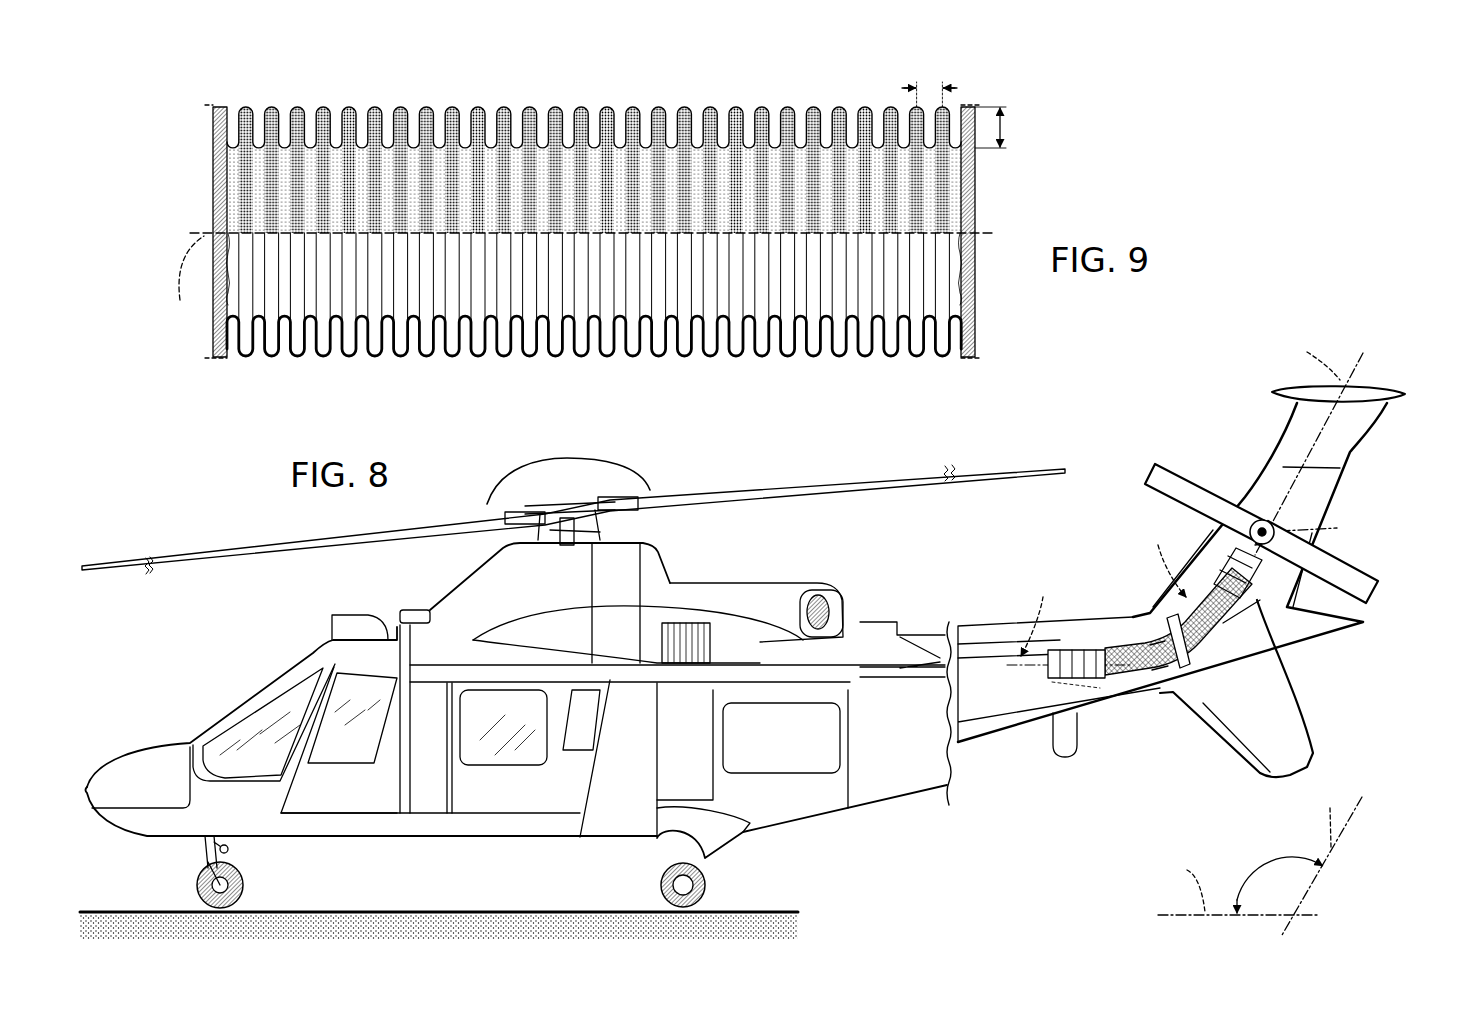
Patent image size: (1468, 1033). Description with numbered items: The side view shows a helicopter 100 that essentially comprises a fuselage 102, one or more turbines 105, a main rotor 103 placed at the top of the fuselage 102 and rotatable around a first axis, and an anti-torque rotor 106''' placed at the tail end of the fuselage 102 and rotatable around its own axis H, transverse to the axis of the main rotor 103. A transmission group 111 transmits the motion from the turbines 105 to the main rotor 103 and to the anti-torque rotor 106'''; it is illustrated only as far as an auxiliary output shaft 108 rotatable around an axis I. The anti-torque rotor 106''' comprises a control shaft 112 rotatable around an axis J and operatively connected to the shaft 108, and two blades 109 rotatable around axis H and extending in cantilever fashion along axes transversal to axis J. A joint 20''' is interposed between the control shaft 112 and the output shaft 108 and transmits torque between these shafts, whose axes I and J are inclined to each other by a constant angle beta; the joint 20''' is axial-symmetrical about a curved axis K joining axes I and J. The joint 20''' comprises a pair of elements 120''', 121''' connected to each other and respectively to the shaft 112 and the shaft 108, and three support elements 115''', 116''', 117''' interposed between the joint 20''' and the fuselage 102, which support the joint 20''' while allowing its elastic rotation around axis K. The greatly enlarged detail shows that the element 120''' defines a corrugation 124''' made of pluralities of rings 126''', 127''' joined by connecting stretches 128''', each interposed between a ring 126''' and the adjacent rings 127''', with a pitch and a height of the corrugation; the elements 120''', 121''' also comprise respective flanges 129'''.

In FIG. 8, the helicopter 100 is at (765, 640).
In FIG. 8, the fuselage 102 is at (880, 760).
In FIG. 8, the main rotor 103 is at (703, 481).
In FIG. 8, the turbines 105 is at (856, 597).
In FIG. 8, the anti-torque rotor 106''' is at (1181, 571).
In FIG. 8, the auxiliary output shaft 108 is at (1000, 650).
In FIG. 8, the blades 109 is at (1178, 488).
In FIG. 8, the transmission group 111 is at (1042, 678).
In FIG. 8, the control shaft 112 is at (1245, 547).
In FIG. 8, the support element 115''' is at (1094, 704).
In FIG. 8, the support element 116''' is at (1188, 701).
In FIG. 8, the support element 117''' is at (1308, 648).
In FIG. 9, the element 120''' is at (629, 212).
In FIG. 8, the element 120''' is at (1129, 608).
In FIG. 8, the element 121''' is at (1270, 688).
In FIG. 8, the joint 20''' is at (1145, 721).
In FIG. 9, the corrugation 124''' is at (594, 199).
In FIG. 9, the rings 126''' is at (594, 143).
In FIG. 9, the rings 127''' is at (594, 155).
In FIG. 9, the connecting stretches 128''' is at (594, 205).
In FIG. 9, the flanges 129''' is at (591, 229).